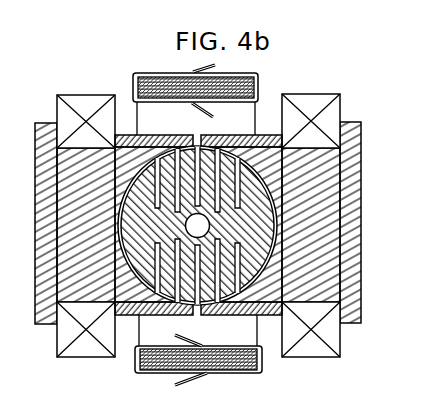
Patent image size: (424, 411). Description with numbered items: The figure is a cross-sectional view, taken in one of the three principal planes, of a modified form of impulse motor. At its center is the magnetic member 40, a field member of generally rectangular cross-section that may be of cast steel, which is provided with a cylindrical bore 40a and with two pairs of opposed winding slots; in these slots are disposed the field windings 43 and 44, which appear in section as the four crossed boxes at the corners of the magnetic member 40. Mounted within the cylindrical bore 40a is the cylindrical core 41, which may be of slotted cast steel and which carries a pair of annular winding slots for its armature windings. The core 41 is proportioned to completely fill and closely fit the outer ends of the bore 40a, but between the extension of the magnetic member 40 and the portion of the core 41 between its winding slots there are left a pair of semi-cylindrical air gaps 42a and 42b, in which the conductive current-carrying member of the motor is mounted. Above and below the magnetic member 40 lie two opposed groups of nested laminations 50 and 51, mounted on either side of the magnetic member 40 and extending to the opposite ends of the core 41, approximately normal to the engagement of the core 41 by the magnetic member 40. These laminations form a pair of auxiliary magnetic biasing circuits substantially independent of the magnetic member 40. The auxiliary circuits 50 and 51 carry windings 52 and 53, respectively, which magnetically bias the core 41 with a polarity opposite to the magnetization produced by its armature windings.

The magnetic member 40 is at (40, 278).
The cylindrical bore 40a is at (280, 241).
The cylindrical core 41 is at (347, 194).
The semi-cylindrical air gap 42a is at (118, 206).
The semi-cylindrical air gap 42b is at (279, 239).
The field winding 43 is at (85, 349).
The field winding 44 is at (314, 349).
The group of nested laminations 50 is at (258, 84).
The group of nested laminations 51 is at (248, 374).
The winding 52 is at (133, 78).
The winding 53 is at (137, 374).